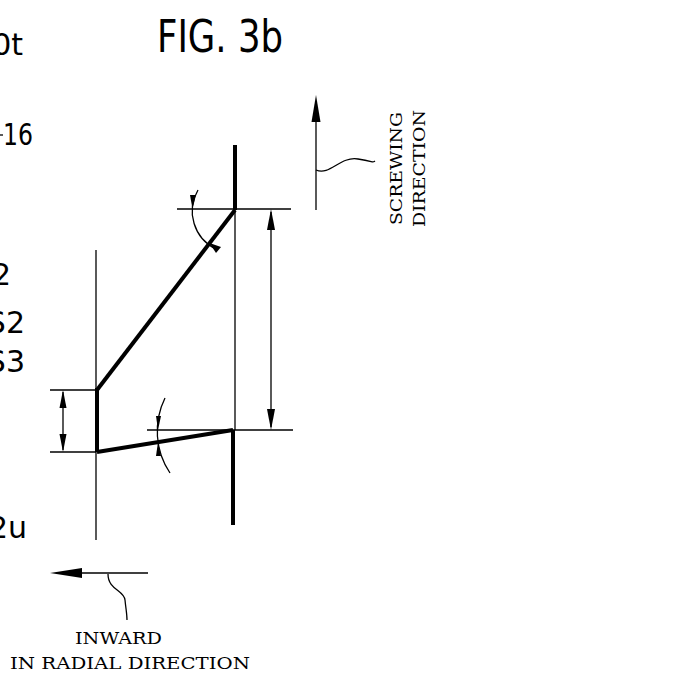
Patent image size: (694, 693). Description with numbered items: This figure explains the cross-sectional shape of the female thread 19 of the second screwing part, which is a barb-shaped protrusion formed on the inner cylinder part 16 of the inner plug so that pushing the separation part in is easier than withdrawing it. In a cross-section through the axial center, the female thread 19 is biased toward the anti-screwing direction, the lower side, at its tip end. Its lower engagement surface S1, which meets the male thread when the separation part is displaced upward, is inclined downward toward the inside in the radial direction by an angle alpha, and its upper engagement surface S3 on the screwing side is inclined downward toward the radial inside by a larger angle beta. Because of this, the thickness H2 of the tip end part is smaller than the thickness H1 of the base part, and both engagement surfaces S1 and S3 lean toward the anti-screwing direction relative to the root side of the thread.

The inner cylinder part 16 is at (136, 150).
The female thread 19 is at (176, 311).
The engagement surface on the screwing side S3 is at (123, 350).
The engagement surface on the anti-screwing side S1 is at (210, 433).
The thickness of the base part H1 is at (252, 319).
The thickness of the tip end part H2 is at (53, 421).